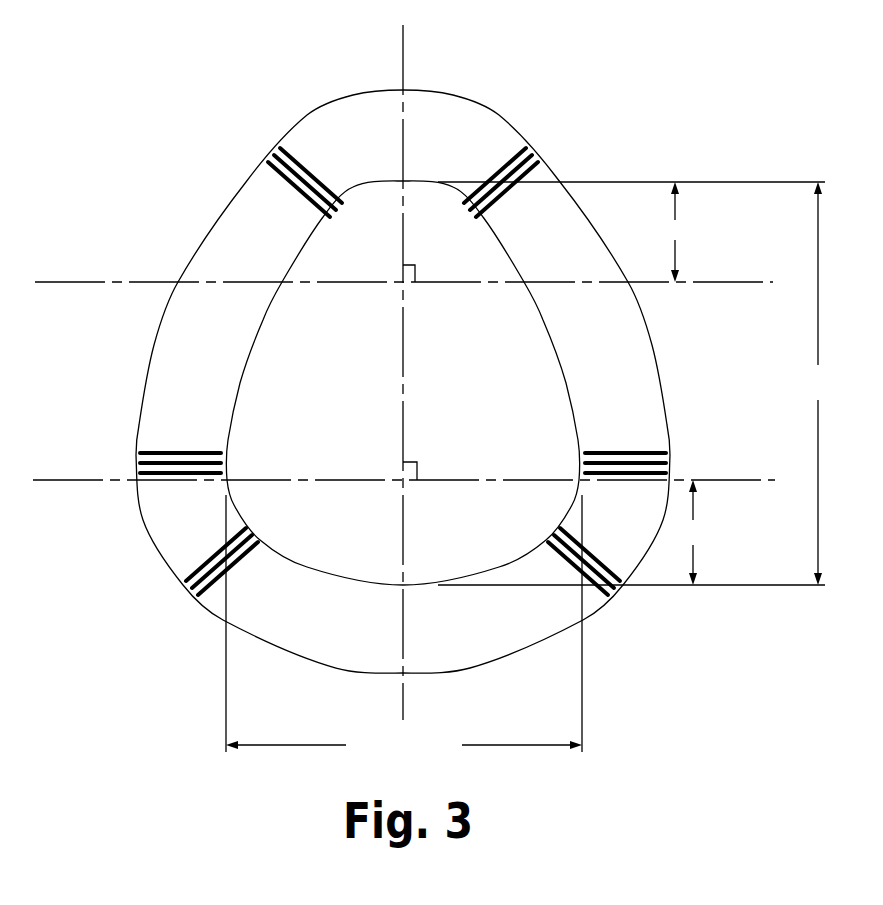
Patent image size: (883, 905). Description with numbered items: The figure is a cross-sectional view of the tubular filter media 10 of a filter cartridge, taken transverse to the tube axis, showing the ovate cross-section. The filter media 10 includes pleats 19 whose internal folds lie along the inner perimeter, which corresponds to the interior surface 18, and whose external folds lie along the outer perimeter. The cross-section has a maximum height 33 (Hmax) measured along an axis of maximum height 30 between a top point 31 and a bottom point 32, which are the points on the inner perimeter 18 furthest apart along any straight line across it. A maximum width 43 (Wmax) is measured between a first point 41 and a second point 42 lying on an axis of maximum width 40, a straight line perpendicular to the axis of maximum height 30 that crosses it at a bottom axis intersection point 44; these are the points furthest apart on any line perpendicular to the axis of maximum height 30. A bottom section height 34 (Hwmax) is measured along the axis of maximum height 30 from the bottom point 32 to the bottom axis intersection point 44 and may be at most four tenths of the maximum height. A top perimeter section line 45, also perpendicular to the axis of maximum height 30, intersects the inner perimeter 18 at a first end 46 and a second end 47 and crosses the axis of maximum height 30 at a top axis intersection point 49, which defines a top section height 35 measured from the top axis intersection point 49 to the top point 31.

The tubular filter media 10 is at (642, 90).
The interior surface 18 is at (237, 390).
The pleats 19 is at (292, 148).
The axis of maximum height 30 is at (405, 42).
The top point 31 is at (403, 182).
The bottom point 32 is at (403, 585).
The maximum height 33 is at (657, 383).
The bottom section height 34 is at (736, 532).
The top section height 35 is at (674, 232).
The axis of maximum width 40 is at (40, 483).
The first point 41 is at (227, 480).
The second point 42 is at (580, 480).
The maximum width 43 is at (404, 626).
The bottom axis intersection point 44 is at (403, 480).
The top perimeter section line 45 is at (40, 283).
The first end 46 is at (282, 283).
The second end 47 is at (525, 283).
The top axis intersection point 49 is at (405, 283).